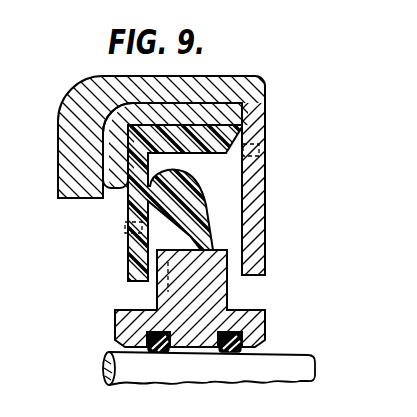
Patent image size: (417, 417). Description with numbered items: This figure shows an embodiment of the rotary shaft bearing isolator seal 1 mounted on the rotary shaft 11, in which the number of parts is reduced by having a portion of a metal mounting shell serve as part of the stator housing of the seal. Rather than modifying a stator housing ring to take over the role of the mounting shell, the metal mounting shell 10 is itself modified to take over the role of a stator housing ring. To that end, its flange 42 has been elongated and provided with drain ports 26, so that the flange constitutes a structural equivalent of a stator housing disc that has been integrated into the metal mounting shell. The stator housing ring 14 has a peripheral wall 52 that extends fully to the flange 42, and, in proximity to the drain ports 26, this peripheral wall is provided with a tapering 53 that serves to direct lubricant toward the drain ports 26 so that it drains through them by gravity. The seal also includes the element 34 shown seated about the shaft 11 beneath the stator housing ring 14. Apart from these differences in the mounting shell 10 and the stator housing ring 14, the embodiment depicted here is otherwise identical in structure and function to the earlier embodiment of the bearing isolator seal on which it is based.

The rotary shaft bearing isolator seal 1 is at (58, 244).
The metal mounting shell 10 is at (258, 105).
The rotary shaft 11 is at (284, 366).
The stator housing ring 14 is at (126, 252).
The drain ports 26 is at (256, 150).
The sleeve / wear sleeve on shaft 34 is at (157, 292).
The flange 42 is at (265, 213).
The peripheral wall 52 is at (188, 159).
The tapering 53 is at (265, 175).